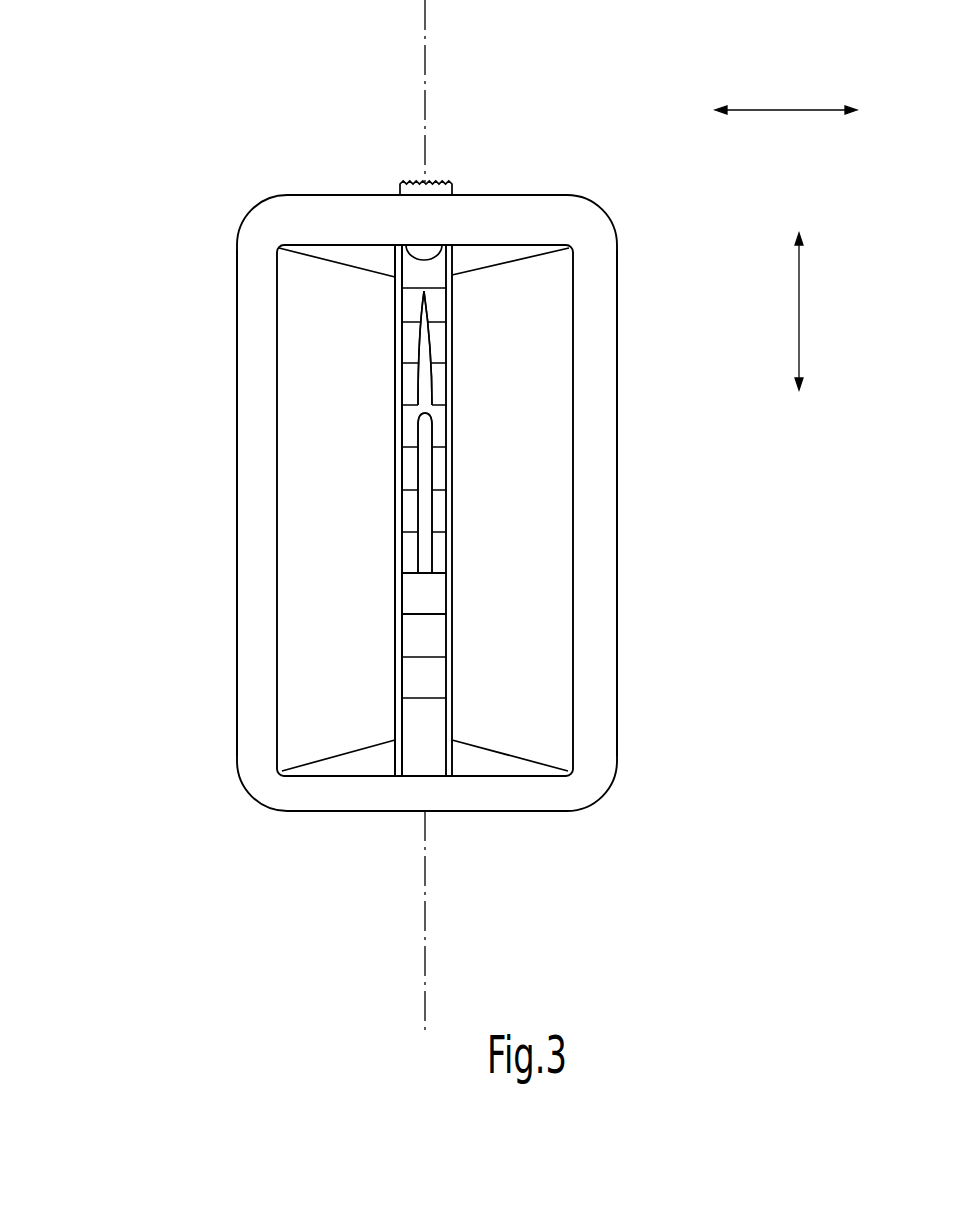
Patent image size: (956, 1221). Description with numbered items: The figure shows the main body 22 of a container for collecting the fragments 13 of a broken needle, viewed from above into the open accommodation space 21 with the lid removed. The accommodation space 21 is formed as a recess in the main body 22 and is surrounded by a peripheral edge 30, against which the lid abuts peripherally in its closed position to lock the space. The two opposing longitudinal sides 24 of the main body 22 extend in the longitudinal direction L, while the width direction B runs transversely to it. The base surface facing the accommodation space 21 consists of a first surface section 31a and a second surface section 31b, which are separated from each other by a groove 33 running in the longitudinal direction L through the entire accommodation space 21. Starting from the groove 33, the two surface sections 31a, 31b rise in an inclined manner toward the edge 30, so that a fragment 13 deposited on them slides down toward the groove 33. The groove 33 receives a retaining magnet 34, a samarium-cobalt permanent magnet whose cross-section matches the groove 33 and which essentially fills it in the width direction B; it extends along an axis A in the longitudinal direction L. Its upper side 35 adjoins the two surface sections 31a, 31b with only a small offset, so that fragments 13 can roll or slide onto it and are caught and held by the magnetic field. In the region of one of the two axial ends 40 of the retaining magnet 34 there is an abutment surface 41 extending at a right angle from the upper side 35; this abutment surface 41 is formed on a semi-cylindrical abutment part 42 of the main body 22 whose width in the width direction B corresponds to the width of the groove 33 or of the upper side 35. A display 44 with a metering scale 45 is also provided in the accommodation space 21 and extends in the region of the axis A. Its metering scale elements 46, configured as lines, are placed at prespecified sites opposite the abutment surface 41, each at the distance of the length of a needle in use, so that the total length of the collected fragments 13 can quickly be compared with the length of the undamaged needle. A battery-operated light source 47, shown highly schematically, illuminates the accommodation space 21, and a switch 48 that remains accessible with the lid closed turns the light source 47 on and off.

The fragments 13 is at (397, 440).
The accommodation space 21 is at (558, 442).
The main body 22 is at (477, 197).
The longitudinal sides 24 is at (615, 480).
The peripheral edge 30 is at (595, 240).
The first surface section 31a is at (296, 726).
The second surface section 31b is at (548, 706).
The groove 33 is at (397, 355).
The retaining magnet 34 is at (428, 594).
The upper side 35 is at (408, 592).
The axial ends 40 is at (478, 258).
The abutment surface 41 is at (444, 304).
The abutment part 42 is at (412, 270).
The display 44 is at (466, 458).
The metering scale 45 is at (425, 493).
The metering scale elements 46 is at (450, 432).
The light source 47 is at (362, 248).
The switch 48 is at (438, 182).
The axis A is at (423, 923).
The width direction B is at (790, 110).
The longitudinal direction L is at (800, 297).